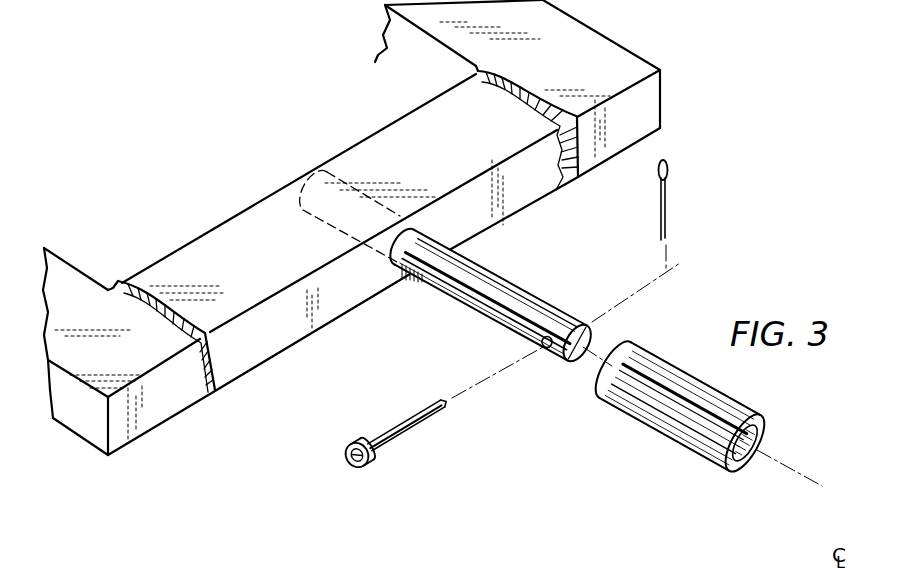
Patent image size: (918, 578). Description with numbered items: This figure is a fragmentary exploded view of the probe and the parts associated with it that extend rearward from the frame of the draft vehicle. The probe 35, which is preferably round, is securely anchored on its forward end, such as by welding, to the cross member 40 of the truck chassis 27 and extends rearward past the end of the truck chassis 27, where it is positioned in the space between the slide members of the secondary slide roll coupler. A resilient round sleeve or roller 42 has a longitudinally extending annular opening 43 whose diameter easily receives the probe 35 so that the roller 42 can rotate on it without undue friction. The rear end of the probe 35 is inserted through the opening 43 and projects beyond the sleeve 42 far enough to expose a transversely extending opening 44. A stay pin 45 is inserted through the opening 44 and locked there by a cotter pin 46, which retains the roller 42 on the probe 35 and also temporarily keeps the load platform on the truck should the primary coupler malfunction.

The truck chassis 27 is at (177, 413).
The cross member 40 is at (350, 303).
The probe 35 is at (533, 290).
The transversely extending opening 44 is at (546, 350).
The stay pin 45 is at (405, 432).
The cotter pin 46 is at (666, 214).
The resilient round sleeve or roller 42 is at (684, 426).
The longitudinally extending annular opening 43 is at (740, 462).